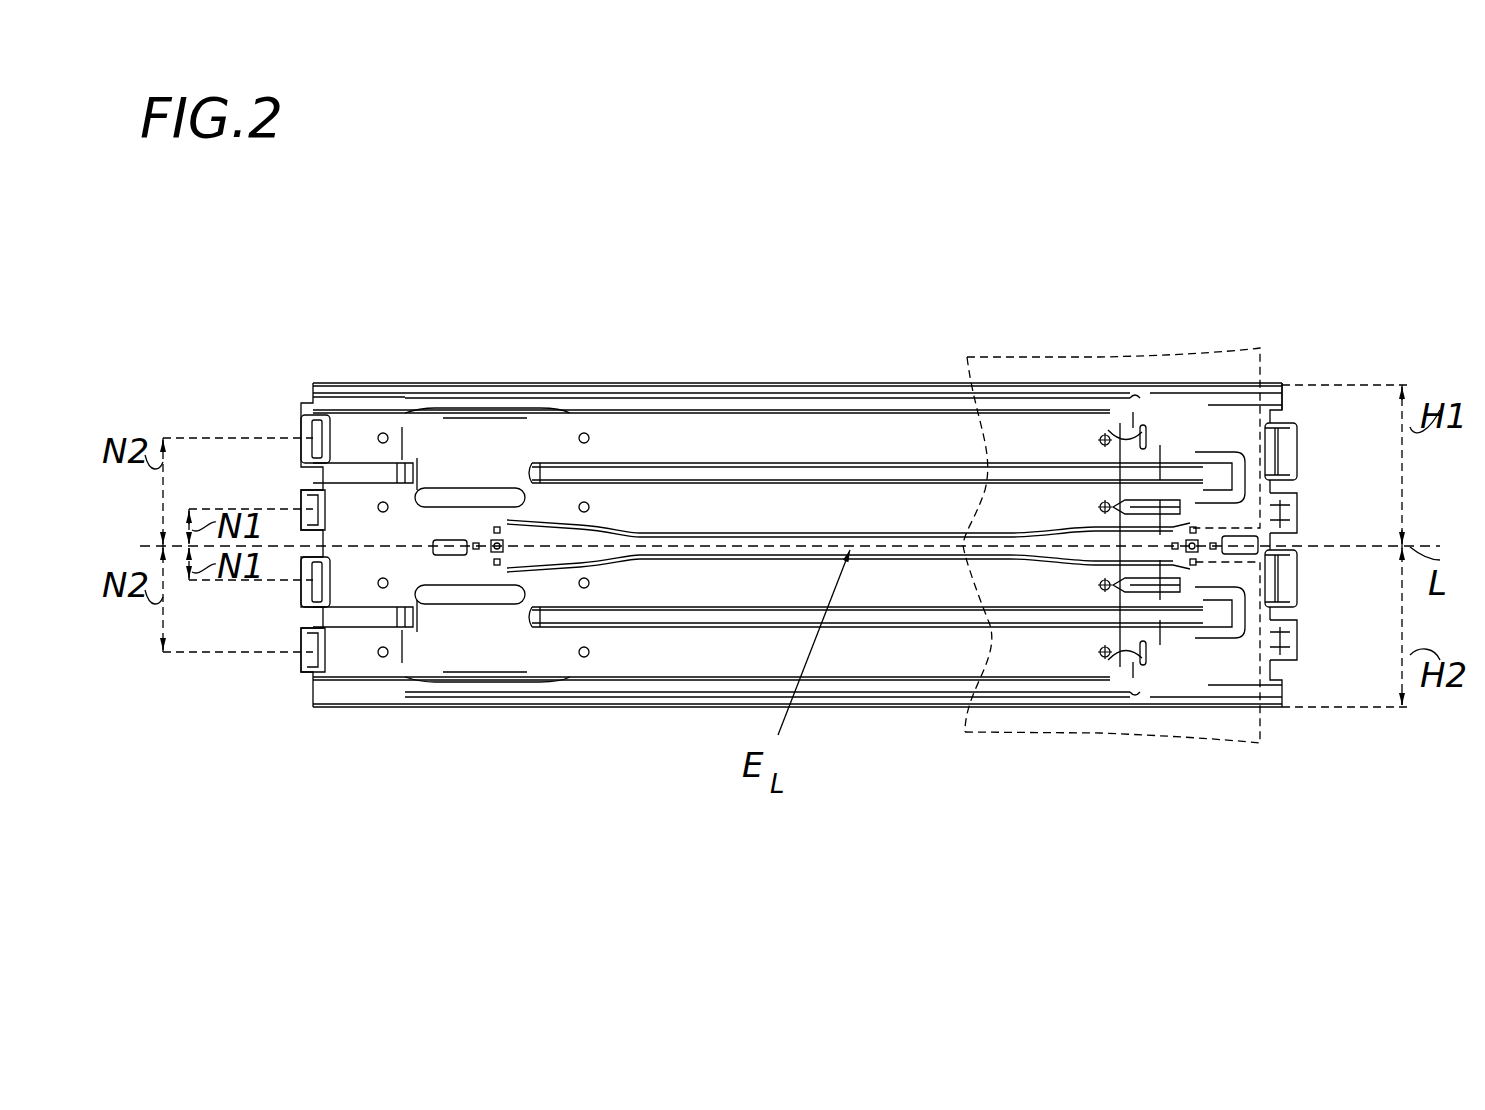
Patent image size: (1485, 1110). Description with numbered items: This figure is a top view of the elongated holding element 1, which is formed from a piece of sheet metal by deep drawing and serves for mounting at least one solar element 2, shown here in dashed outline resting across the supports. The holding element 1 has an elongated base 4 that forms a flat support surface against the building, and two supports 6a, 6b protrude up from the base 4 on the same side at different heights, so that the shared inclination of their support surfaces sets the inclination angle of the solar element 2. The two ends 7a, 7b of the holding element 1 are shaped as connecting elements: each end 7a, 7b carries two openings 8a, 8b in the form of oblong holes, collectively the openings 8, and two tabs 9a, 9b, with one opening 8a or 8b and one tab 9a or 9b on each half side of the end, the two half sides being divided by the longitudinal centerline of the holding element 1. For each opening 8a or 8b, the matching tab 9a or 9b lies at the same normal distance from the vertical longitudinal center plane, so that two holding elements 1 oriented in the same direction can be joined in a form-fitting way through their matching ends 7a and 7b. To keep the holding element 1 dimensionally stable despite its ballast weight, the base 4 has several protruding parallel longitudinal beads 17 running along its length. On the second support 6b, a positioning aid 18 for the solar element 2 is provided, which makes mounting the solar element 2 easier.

The holding element 1 is at (645, 282).
The solar element 2 is at (1000, 355).
The base 4 is at (808, 447).
The first support 6a is at (478, 440).
The second support 6b is at (1193, 445).
The end 7a is at (298, 700).
The end 7b is at (1288, 693).
The openings 8 is at (1290, 403).
The opening 8a is at (320, 430).
The opening 8b is at (320, 595).
The tab 9a is at (310, 505).
The tab 9b is at (310, 663).
The longitudinal beads 17 is at (713, 625).
The positioning aid 18 is at (450, 560).